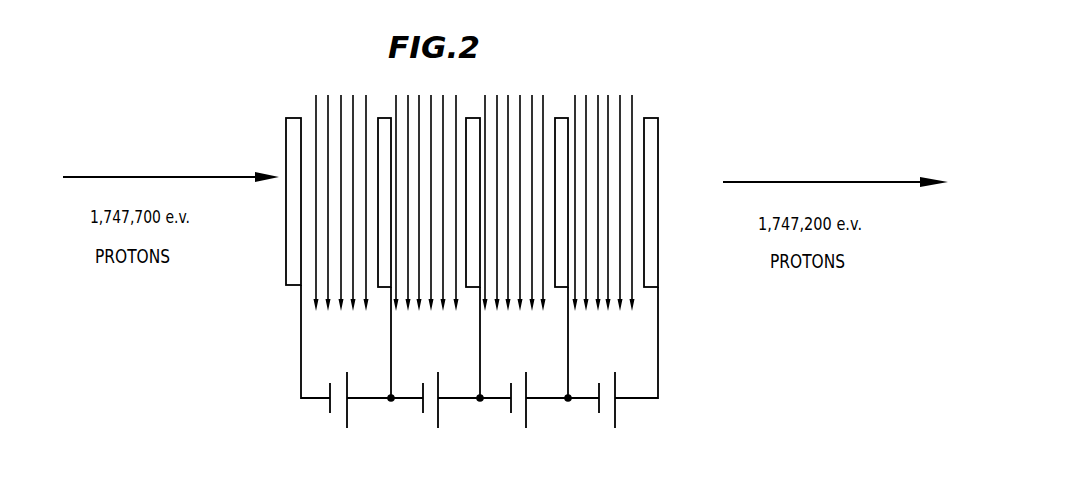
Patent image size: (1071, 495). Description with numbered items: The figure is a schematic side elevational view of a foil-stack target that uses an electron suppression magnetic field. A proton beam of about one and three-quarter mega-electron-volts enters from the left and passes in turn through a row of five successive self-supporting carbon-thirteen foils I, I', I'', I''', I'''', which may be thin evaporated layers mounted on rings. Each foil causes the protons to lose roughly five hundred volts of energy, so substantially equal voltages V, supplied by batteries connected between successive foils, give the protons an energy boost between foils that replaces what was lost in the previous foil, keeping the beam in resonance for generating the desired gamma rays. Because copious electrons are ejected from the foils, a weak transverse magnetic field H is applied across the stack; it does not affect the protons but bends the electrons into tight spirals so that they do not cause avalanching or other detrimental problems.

The self-supporting foil I is at (277, 173).
The self-supporting foil I' is at (389, 174).
The self-supporting foil I'' is at (480, 175).
The self-supporting foil I''' is at (573, 175).
The self-supporting foil I'''' is at (660, 176).
The transverse magnetic field H is at (510, 258).
The voltage V is at (479, 356).